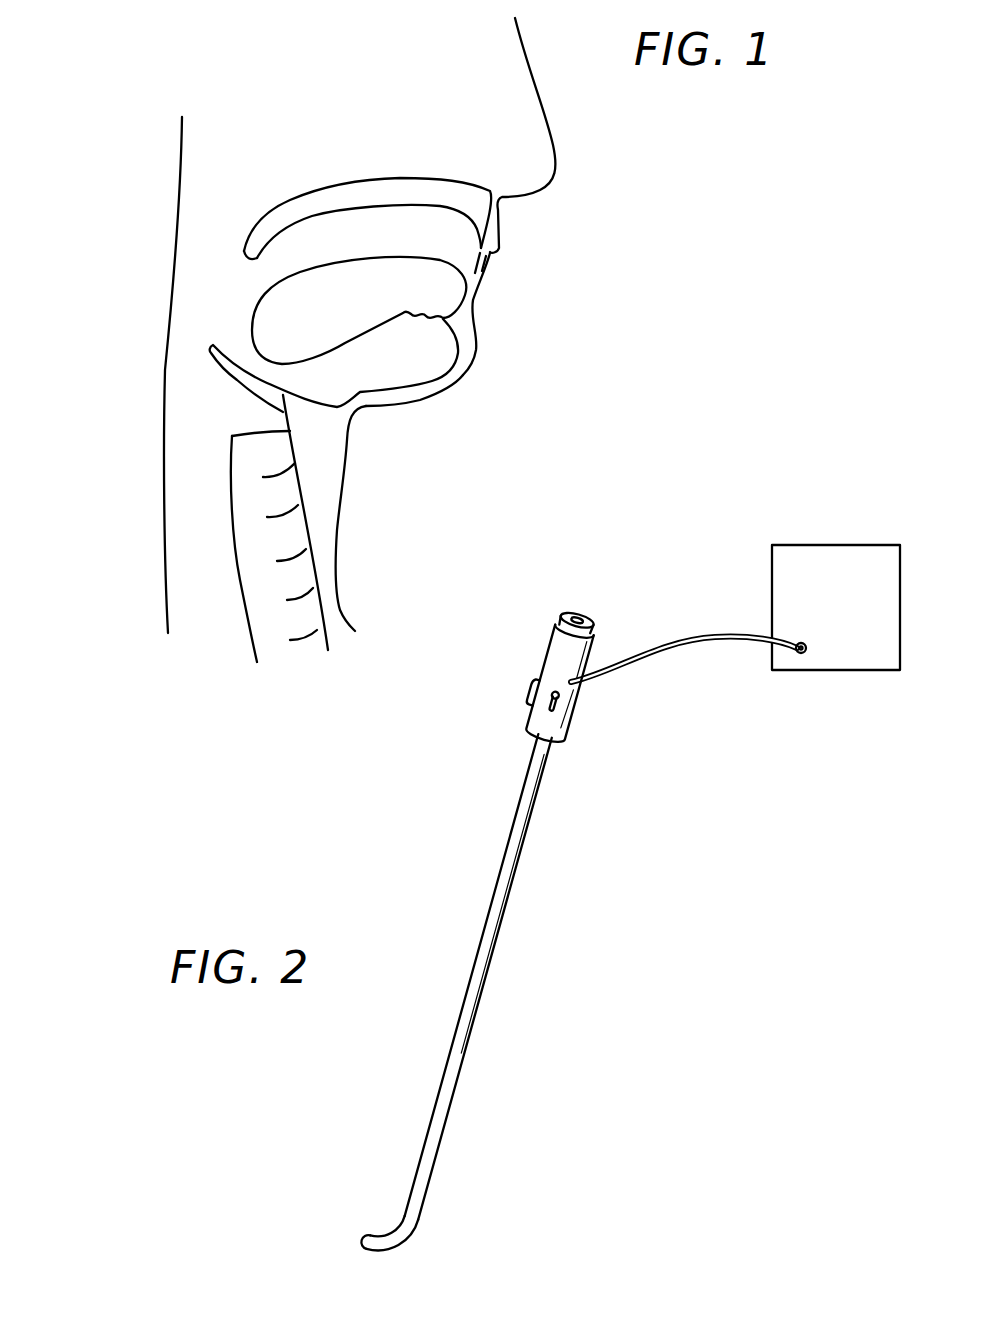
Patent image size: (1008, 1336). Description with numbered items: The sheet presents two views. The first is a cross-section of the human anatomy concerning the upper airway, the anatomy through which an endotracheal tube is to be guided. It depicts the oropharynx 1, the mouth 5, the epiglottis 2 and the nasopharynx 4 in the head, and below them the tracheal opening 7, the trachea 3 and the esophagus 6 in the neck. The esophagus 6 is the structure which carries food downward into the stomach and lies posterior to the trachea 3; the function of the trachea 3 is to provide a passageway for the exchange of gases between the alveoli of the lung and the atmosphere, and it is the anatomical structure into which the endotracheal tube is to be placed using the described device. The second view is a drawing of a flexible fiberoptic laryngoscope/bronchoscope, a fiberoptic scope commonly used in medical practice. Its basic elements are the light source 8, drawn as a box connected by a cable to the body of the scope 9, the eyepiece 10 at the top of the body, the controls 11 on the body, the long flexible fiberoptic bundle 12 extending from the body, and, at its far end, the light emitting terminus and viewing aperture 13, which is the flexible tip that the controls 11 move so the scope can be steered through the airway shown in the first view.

In FIG. 1, the oropharynx 1 is at (228, 312).
In FIG. 1, the epiglottis 2 is at (227, 373).
In FIG. 1, the trachea 3 is at (287, 538).
In FIG. 1, the nasopharynx 4 is at (236, 190).
In FIG. 1, the mouth 5 is at (493, 255).
In FIG. 1, the esophagus 6 is at (211, 539).
In FIG. 1, the tracheal opening 7 is at (247, 413).
In FIG. 2, the light source 8 is at (848, 605).
In FIG. 2, the body of the scope 9 is at (555, 662).
In FIG. 2, the eyepiece 10 is at (583, 616).
In FIG. 2, the controls 11 is at (527, 700).
In FIG. 2, the fiberoptic bundle 12 is at (489, 949).
In FIG. 2, the light emitting terminus and viewing aperture 13 is at (368, 1240).